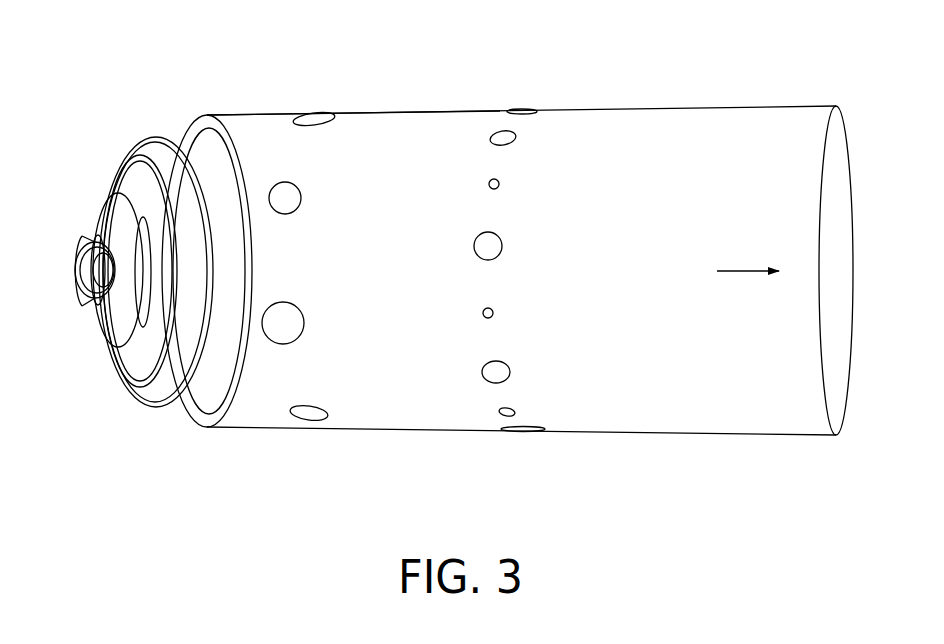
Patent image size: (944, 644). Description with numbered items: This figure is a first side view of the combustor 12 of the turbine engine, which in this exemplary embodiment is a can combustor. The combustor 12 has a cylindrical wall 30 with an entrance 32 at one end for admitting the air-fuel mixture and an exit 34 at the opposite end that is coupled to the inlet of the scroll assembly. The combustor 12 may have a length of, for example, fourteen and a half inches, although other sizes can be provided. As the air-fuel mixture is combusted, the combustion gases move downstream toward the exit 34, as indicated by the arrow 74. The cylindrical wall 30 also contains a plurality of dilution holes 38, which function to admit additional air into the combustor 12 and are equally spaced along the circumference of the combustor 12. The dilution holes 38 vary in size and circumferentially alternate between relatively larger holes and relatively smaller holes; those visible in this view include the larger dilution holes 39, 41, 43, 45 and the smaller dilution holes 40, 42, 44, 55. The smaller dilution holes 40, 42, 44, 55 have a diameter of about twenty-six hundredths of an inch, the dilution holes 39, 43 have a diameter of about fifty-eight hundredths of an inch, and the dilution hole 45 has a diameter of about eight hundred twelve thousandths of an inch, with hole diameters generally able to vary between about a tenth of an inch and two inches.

The combustor 12 is at (364, 109).
The cylindrical wall 30 is at (723, 117).
The entrance 32 is at (92, 218).
The exit 34 is at (845, 193).
The dilution holes 38 is at (541, 153).
The dilution hole 39 is at (490, 141).
The dilution hole 40 is at (489, 185).
The dilution hole 41 is at (474, 247).
The dilution hole 42 is at (483, 314).
The dilution hole 43 is at (482, 372).
The dilution hole 44 is at (499, 411).
The dilution hole 45 is at (522, 432).
The dilution hole 55 is at (523, 111).
The arrow 74 is at (740, 270).